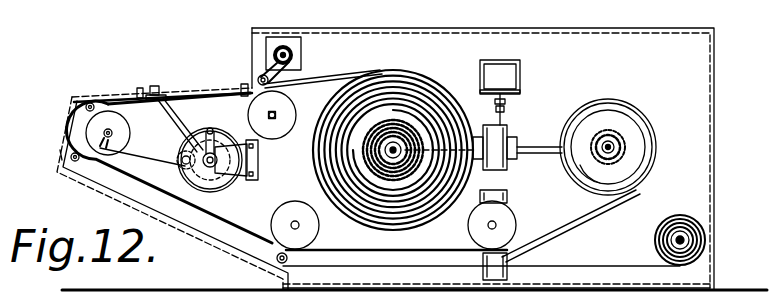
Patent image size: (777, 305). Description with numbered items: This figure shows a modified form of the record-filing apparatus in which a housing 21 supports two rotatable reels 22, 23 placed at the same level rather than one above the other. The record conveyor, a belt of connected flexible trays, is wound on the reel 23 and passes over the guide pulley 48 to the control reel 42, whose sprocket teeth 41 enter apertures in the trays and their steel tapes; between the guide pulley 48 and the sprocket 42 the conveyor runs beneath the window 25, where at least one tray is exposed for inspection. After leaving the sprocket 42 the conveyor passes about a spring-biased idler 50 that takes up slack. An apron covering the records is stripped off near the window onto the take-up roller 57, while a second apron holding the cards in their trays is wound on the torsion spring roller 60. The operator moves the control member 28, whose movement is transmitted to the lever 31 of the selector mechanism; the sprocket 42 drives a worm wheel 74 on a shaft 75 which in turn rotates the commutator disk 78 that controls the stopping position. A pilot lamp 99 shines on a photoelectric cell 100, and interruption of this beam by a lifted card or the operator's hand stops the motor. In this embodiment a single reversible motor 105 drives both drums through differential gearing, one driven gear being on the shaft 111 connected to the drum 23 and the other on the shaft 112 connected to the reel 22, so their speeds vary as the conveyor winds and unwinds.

The housing 21 is at (413, 30).
The reel 22 is at (620, 124).
The reel 23 is at (410, 124).
The window 25 is at (188, 96).
The control member 28 is at (157, 86).
The lever 31 is at (173, 131).
The sprocket teeth 41 is at (128, 121).
The control reel 42 is at (92, 129).
The guide pulley 48 is at (284, 118).
The idler 50 is at (506, 224).
The take-up roller 57 is at (266, 52).
The torsion spring roller 60 is at (656, 240).
The worm wheel 74 is at (60, 153).
The shaft 75 is at (140, 161).
The commutator disk 78 is at (218, 140).
The pilot lamp 99 is at (140, 88).
The photoelectric cell 100 is at (242, 88).
The motor 105 is at (510, 79).
The shaft 111 is at (472, 135).
The shaft 112 is at (538, 150).